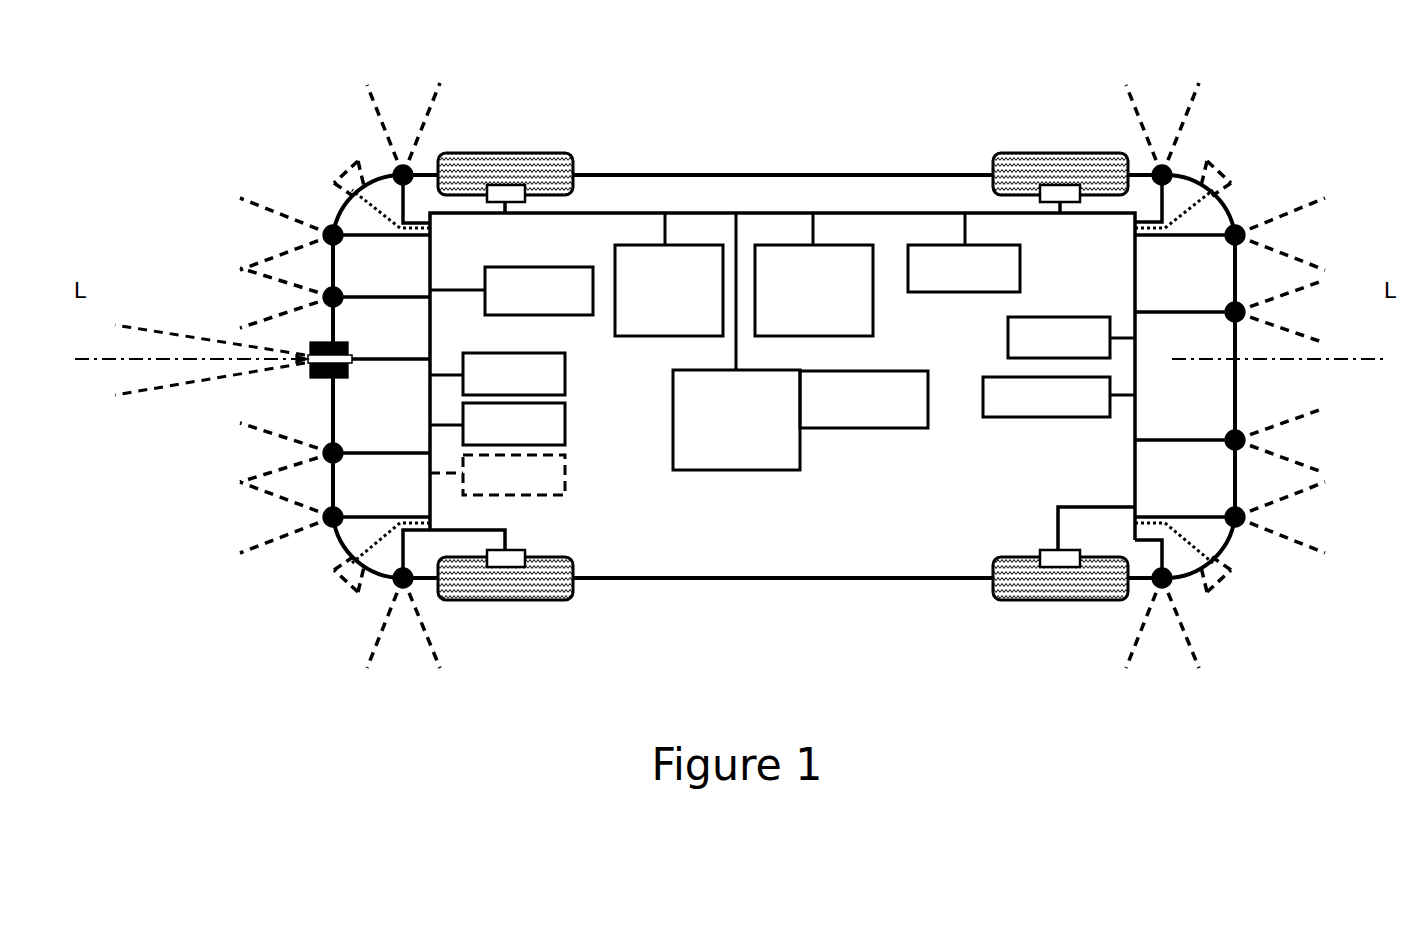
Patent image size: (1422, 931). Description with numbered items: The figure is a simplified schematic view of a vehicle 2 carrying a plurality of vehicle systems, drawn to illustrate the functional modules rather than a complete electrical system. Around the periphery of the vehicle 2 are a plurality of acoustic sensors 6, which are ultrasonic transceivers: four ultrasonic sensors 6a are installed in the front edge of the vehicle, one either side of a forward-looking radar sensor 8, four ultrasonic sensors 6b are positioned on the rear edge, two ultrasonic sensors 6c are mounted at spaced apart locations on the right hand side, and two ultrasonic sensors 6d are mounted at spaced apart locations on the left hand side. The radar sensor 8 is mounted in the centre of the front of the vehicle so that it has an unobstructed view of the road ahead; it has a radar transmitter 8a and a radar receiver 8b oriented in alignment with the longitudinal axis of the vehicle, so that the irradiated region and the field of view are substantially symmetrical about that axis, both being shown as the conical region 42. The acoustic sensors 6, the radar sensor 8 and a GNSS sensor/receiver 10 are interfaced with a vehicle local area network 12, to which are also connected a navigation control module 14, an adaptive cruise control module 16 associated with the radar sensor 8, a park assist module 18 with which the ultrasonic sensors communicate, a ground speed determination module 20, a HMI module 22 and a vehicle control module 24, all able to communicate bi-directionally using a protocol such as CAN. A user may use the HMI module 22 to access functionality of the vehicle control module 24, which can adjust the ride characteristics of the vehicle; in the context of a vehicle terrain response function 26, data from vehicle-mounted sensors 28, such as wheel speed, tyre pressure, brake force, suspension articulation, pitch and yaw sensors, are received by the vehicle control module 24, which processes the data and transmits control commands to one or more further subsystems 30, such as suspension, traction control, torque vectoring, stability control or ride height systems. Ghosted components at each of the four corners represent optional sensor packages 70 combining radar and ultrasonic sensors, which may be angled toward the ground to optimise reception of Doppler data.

The vehicle 2 is at (1340, 92).
The acoustic sensors 6 is at (791, 378).
The front ultrasonic sensors 6a is at (343, 293).
The rear ultrasonic sensors 6b is at (1247, 235).
The right-hand side ultrasonic sensors 6c is at (403, 164).
The left-hand side ultrasonic sensors 6d is at (403, 590).
The forward-looking radar sensor 8 is at (337, 368).
The radar transmitter 8a is at (348, 345).
The radar receiver 8b is at (350, 376).
The GNSS sensor/receiver 10 is at (1020, 417).
The vehicle local area network 12 is at (1135, 282).
The navigation control module 14 is at (1008, 338).
The adaptive cruise control module 16 is at (873, 308).
The park assist module 18 is at (650, 336).
The ground speed determination module 20 is at (557, 266).
The HMI module 22 is at (1020, 268).
The vehicle control module 24 is at (738, 470).
The vehicle terrain response function 26 is at (873, 428).
The vehicle-mounted sensors 28 is at (518, 185).
The further subsystems 30 is at (565, 385).
The conical region 42 is at (120, 405).
The sensor packages 70 is at (347, 172).